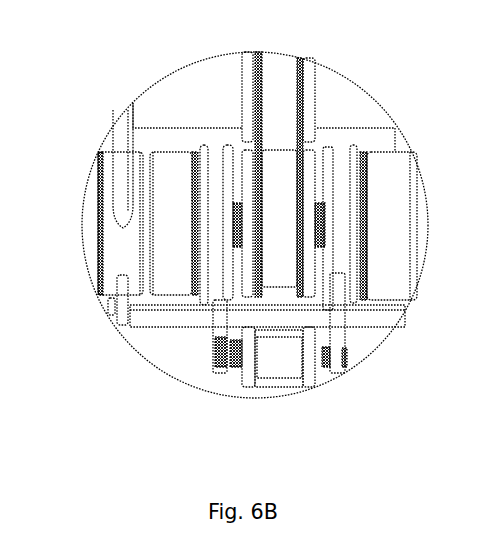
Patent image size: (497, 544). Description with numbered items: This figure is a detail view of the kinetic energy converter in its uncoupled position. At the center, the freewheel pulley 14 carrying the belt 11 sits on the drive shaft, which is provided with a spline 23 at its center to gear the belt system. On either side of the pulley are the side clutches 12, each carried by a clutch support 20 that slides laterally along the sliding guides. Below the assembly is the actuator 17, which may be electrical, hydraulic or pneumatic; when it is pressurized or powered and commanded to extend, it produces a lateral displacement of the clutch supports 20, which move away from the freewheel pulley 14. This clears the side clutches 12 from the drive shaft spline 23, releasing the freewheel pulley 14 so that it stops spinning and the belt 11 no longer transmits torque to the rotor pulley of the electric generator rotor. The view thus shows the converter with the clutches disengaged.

The belt 11 is at (278, 118).
The side clutches 12 is at (387, 282).
The freewheel pulley 14 is at (250, 245).
The actuator 17 is at (277, 357).
The clutch supports 20 is at (217, 185).
The spline 23 is at (315, 228).